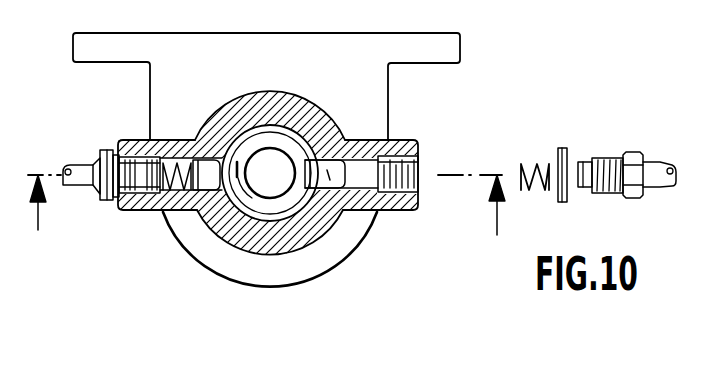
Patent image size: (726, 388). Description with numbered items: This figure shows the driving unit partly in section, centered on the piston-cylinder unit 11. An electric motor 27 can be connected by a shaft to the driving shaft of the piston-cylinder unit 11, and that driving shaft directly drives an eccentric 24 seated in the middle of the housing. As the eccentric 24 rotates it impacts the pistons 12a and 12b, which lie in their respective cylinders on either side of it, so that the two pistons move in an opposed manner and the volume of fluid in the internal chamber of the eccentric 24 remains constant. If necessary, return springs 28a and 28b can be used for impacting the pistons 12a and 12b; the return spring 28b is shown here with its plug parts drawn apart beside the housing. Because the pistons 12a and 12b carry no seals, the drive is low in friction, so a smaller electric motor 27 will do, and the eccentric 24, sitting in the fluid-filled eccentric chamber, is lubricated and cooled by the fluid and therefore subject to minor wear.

The piston-cylinder unit 11 is at (225, 237).
The piston 12a is at (195, 138).
The piston 12b is at (342, 210).
The eccentric 24 is at (245, 145).
The electric motor 27 is at (353, 84).
The return spring 28a is at (160, 213).
The return spring 28b is at (531, 162).